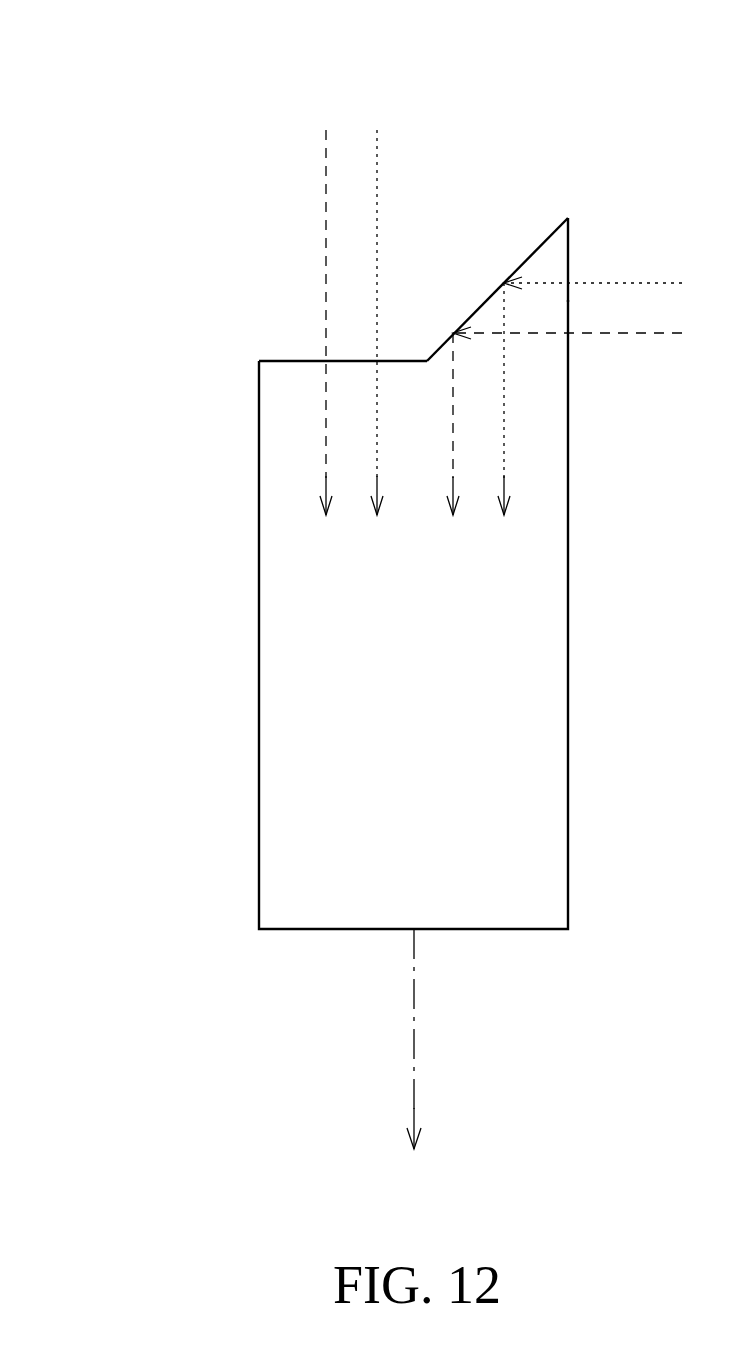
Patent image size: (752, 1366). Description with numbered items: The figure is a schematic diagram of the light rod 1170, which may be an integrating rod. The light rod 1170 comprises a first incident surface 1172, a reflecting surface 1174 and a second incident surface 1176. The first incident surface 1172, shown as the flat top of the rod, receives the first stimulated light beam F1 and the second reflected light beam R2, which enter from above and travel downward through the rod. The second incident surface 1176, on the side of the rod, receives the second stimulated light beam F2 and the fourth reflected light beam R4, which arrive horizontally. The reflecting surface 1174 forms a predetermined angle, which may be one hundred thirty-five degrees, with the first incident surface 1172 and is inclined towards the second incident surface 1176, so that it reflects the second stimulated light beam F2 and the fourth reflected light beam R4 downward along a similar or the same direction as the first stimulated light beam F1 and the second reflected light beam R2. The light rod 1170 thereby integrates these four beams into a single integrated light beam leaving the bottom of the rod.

The light rod 1170 is at (176, 95).
The first incident surface 1172 is at (285, 360).
The reflecting surface 1174 is at (531, 255).
The second incident surface 1176 is at (570, 248).
The first stimulated light beam F1 is at (326, 207).
The second reflected light beam R2 is at (377, 197).
The fourth reflected light beam R4 is at (629, 281).
The second stimulated light beam F2 is at (637, 338).